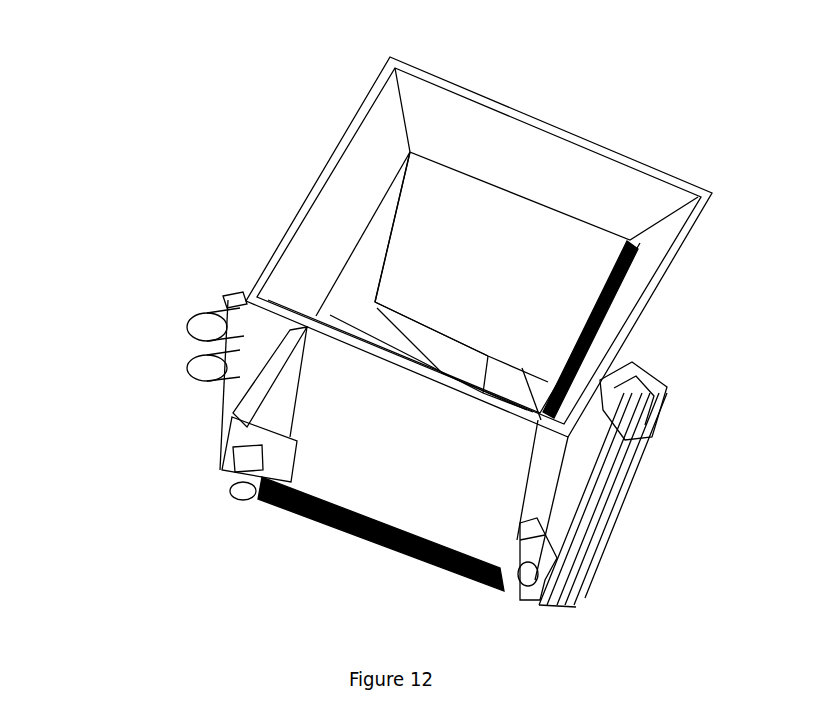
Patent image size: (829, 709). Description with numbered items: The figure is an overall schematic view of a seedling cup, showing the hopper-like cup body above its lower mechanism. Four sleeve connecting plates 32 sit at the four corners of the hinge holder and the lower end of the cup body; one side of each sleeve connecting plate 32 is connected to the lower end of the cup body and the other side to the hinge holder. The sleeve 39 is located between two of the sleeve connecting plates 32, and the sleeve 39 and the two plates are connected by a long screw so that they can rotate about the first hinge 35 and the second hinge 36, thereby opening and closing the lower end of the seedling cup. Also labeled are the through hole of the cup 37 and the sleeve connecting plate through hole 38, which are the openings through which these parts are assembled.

The clamp 32 is at (640, 357).
The sealing strip 35 is at (497, 580).
The fastener 36 is at (528, 557).
The hopper chute 37 is at (397, 192).
The chute outlet 38 is at (377, 300).
The guide rail 39 is at (670, 387).